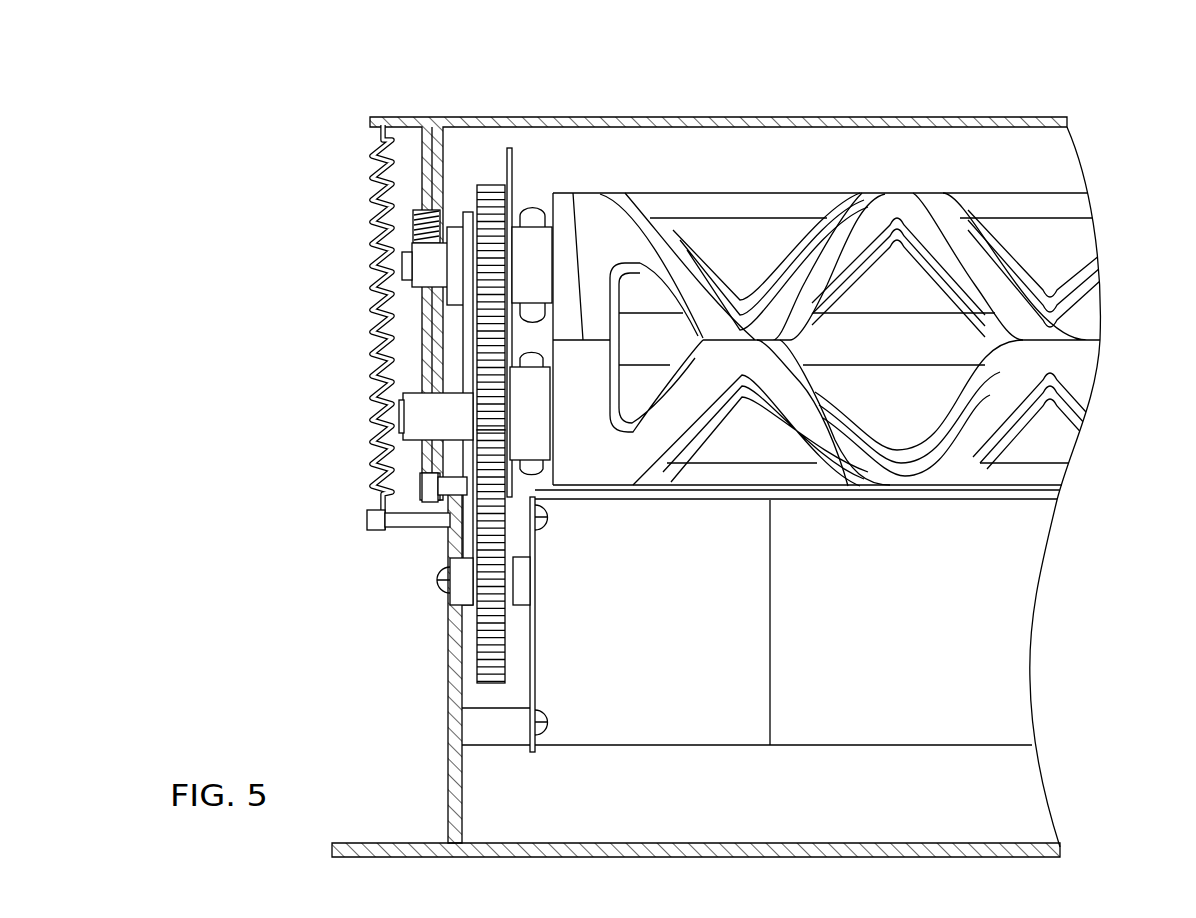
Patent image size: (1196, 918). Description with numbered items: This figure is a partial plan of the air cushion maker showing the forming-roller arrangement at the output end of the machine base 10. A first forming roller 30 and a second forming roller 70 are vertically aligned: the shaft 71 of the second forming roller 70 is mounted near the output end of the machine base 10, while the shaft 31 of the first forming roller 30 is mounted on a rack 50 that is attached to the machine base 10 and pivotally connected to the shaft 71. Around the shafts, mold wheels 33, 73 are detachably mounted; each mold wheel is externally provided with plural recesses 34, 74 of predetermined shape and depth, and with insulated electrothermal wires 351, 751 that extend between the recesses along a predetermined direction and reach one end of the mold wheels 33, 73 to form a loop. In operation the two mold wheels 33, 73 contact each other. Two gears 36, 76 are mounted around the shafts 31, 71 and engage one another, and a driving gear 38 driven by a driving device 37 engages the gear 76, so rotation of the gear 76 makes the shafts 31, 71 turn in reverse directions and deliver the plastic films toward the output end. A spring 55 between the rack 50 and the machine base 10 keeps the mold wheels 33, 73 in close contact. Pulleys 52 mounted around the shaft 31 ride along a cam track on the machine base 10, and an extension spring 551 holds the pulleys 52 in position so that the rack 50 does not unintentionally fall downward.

The machine base 10 is at (455, 675).
The first forming roller 30 is at (637, 178).
The shaft 31 is at (402, 266).
The mold wheel 33 is at (933, 230).
The recesses 34 is at (784, 230).
The gear 36 is at (490, 188).
The driving device 37 is at (625, 735).
The driving gear 38 is at (506, 647).
The rack 50 is at (567, 108).
The pulleys 52 is at (456, 225).
The spring 55 is at (412, 232).
The second forming roller 70 is at (687, 490).
The shaft 71 is at (403, 415).
The mold wheel 73 is at (961, 490).
The recesses 74 is at (738, 445).
The gear 76 is at (478, 432).
The electrothermal wires 351 is at (556, 193).
The extension spring 551 is at (372, 156).
The electrothermal wires 751 is at (560, 487).